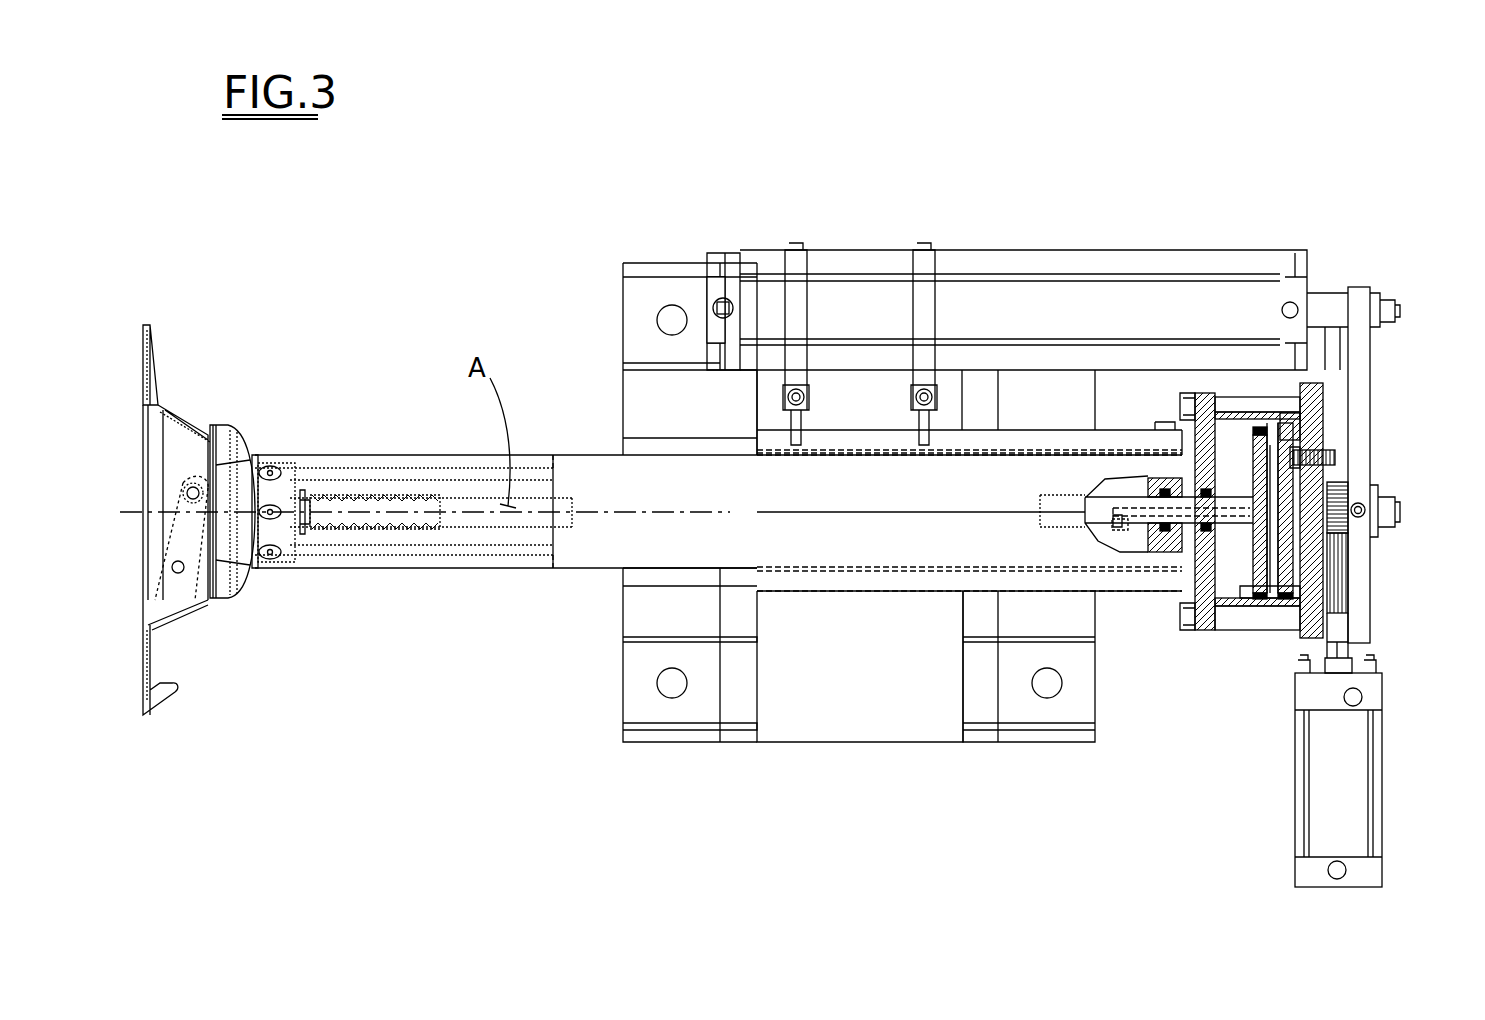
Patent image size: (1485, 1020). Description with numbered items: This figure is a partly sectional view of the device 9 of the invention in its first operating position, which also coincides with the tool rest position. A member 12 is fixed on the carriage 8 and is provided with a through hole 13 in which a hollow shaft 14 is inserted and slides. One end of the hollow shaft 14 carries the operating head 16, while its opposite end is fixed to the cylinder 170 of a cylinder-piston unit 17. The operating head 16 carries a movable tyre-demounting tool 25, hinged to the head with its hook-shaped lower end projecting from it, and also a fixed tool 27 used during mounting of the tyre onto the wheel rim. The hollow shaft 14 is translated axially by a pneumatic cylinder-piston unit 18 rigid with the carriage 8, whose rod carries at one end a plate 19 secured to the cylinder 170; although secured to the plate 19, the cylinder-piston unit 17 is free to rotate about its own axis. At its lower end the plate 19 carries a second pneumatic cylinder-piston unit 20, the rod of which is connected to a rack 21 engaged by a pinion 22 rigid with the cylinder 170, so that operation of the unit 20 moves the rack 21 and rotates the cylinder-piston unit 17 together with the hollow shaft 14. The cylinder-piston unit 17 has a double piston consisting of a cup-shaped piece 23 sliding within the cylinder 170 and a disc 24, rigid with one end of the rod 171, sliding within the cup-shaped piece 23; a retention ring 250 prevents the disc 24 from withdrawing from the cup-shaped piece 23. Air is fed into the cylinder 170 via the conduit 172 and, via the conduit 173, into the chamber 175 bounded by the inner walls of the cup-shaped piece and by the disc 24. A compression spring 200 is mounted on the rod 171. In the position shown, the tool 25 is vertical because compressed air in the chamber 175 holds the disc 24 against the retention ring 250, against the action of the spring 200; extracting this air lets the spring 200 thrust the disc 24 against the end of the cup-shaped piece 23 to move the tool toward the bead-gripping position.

The carriage 8 is at (912, 722).
The positioning device 9 is at (556, 258).
The member 12 is at (818, 528).
The through hole 13 is at (884, 567).
The hollow shaft 14 is at (581, 569).
The operating head 16 is at (205, 405).
The cylinder-piston unit 17 is at (1198, 378).
The pneumatic cylinder-piston unit 18 is at (1062, 258).
The plate 19 is at (1365, 358).
The second pneumatic cylinder-piston unit 20 is at (1352, 800).
The rack 21 is at (1338, 595).
The pinion 22 is at (1340, 490).
The cup-shaped piece 23 is at (1268, 560).
The disc 24 is at (1255, 558).
The movable tyre-demounting tool 25 is at (163, 695).
The fixed tool 27 is at (151, 358).
The cylinder 170 is at (1237, 400).
The rod 171 is at (481, 522).
The conduit 172 is at (1335, 463).
The conduit 173 is at (1133, 530).
The chamber 175 is at (1273, 541).
The compression spring 200 is at (378, 530).
The retention ring 250 is at (1243, 590).